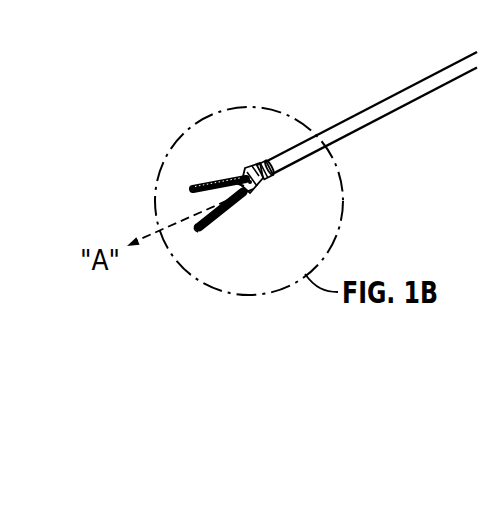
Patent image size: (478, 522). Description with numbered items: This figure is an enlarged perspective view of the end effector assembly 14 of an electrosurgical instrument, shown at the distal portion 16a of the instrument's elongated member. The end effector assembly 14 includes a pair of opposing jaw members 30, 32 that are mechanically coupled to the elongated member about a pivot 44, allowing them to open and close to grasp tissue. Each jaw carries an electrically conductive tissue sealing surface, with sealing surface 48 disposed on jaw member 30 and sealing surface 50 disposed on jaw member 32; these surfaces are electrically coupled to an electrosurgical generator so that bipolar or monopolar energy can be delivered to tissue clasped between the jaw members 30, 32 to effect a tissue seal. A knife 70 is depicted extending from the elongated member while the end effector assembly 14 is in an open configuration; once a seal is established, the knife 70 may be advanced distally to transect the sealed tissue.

The end effector assembly 14 is at (249, 160).
The distal portion of elongated member 16a is at (292, 189).
The jaw member 30 is at (210, 182).
The jaw member 32 is at (217, 223).
The pivot 44 is at (254, 191).
The tissue sealing surface 48 is at (195, 195).
The tissue sealing surface 50 is at (207, 230).
The knife 70 is at (228, 178).